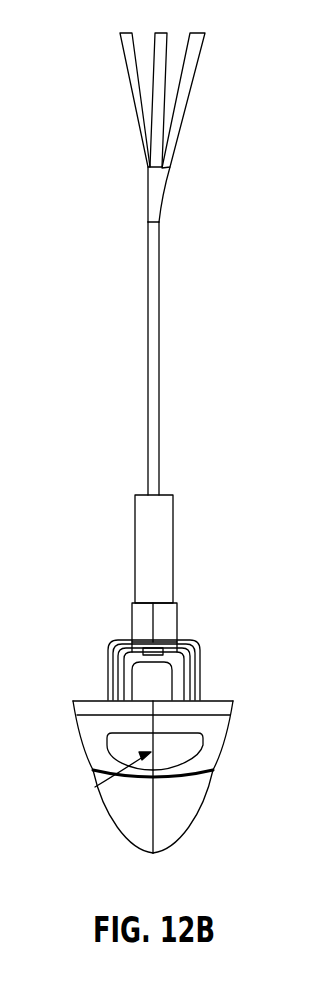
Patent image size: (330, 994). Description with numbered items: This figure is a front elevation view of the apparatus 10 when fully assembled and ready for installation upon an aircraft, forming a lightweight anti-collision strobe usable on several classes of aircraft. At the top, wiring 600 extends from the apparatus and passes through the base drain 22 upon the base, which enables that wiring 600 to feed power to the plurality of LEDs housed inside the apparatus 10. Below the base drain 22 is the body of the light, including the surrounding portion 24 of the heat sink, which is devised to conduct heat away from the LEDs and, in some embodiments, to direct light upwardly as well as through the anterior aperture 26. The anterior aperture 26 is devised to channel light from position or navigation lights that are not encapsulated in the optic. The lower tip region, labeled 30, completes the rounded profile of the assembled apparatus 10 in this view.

The apparatus 10 is at (220, 243).
The wiring 600 is at (160, 357).
The base drain 22 is at (202, 700).
The surrounding portion of heat sink 24 is at (210, 737).
The anterior aperture 26 is at (95, 787).
The tip 30 is at (175, 817).